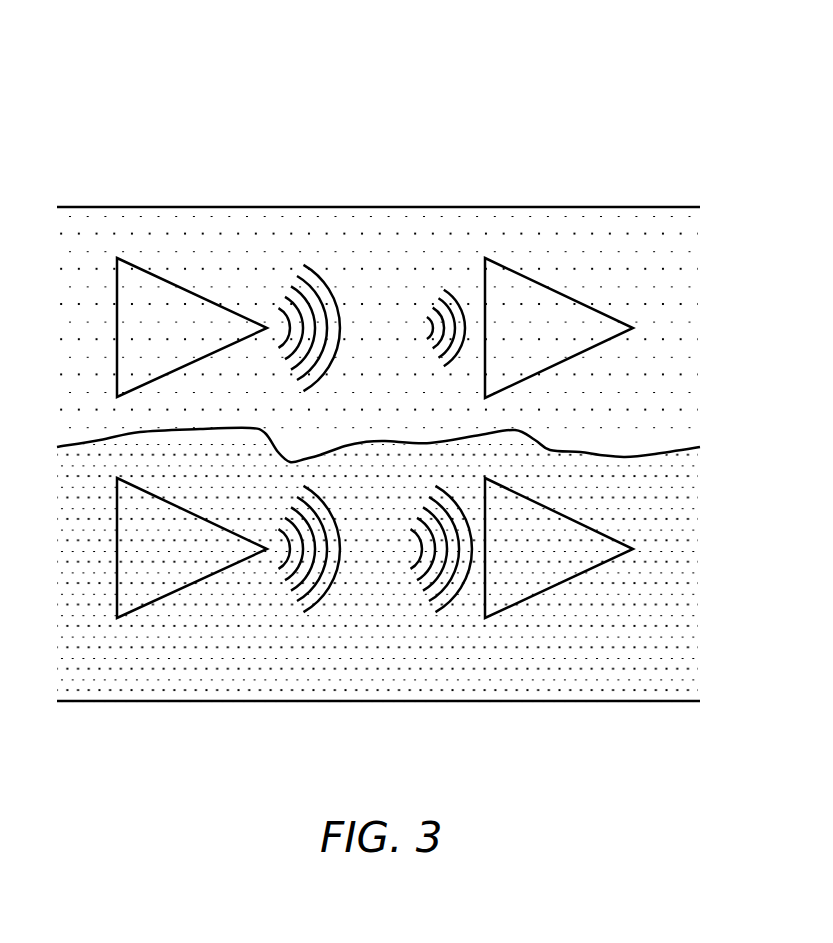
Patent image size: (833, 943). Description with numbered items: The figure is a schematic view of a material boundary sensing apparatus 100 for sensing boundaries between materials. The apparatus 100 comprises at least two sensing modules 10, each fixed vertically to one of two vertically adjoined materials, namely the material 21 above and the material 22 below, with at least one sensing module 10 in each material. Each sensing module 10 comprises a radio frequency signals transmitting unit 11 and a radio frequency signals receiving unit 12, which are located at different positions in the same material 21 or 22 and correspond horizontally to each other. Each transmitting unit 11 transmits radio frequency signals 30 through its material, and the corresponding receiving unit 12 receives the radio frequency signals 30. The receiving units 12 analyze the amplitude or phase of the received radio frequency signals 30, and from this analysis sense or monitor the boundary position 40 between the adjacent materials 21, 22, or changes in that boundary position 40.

The material boundary sensing apparatus 100 is at (830, 72).
The sensing module 10 is at (230, 80).
The radio frequency signals transmitting unit 11 is at (195, 310).
The radio frequency signals receiving unit 12 is at (515, 283).
The material 21 is at (668, 252).
The material 22 is at (670, 636).
The radio frequency signals 30 is at (330, 278).
The boundary position 40 is at (630, 455).